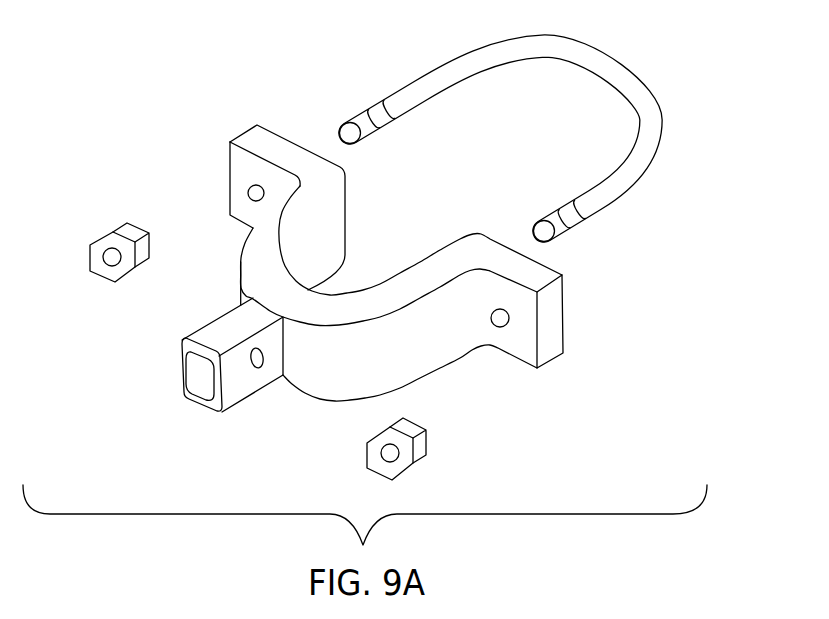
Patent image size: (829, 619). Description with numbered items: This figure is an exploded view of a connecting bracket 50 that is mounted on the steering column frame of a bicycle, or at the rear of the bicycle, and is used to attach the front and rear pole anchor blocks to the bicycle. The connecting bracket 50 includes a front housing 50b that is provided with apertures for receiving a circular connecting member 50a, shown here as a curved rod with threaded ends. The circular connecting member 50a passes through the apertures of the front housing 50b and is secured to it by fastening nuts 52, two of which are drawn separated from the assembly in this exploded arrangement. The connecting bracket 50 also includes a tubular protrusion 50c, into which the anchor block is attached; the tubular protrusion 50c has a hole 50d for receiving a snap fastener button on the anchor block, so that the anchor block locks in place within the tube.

The connecting bracket 50 is at (379, 256).
The circular connecting member 50a is at (638, 85).
The front housing 50b is at (266, 140).
The tubular protrusion 50c is at (216, 410).
The hole 50d is at (256, 364).
The fastening nuts 52 is at (89, 257).